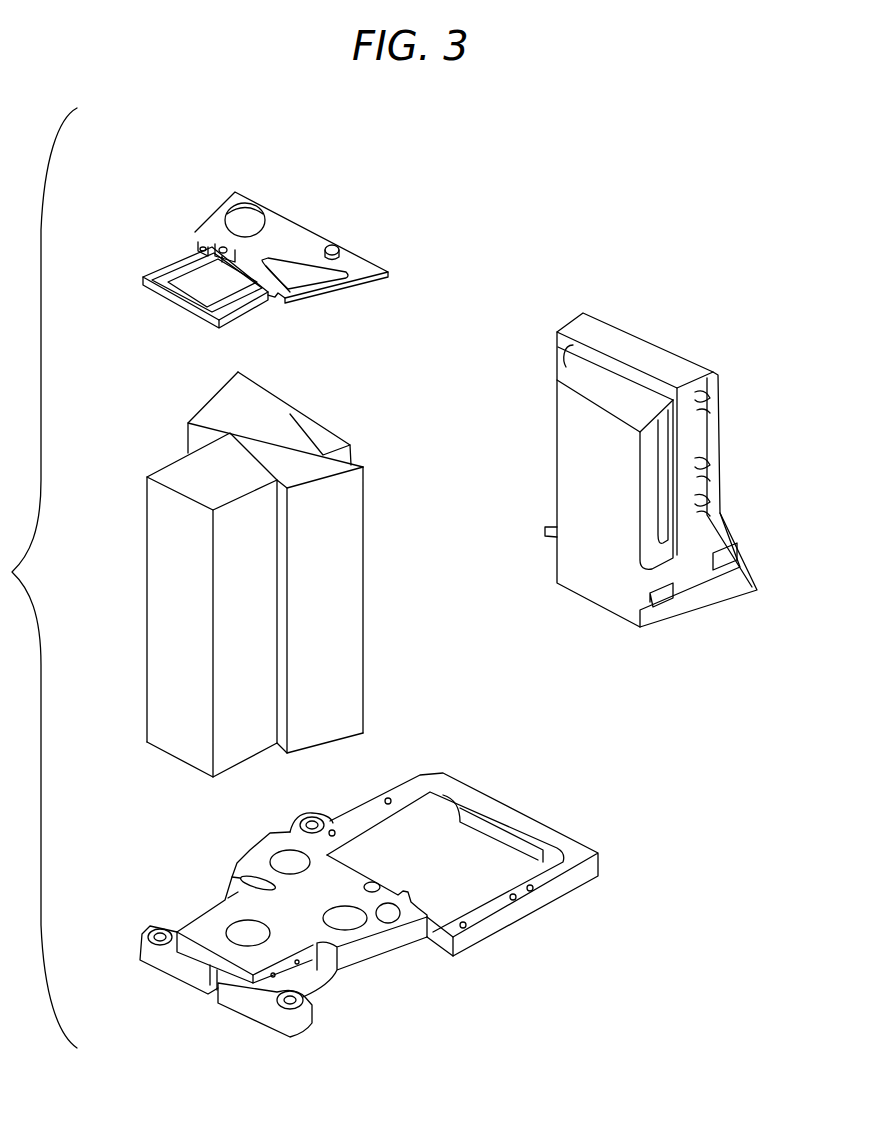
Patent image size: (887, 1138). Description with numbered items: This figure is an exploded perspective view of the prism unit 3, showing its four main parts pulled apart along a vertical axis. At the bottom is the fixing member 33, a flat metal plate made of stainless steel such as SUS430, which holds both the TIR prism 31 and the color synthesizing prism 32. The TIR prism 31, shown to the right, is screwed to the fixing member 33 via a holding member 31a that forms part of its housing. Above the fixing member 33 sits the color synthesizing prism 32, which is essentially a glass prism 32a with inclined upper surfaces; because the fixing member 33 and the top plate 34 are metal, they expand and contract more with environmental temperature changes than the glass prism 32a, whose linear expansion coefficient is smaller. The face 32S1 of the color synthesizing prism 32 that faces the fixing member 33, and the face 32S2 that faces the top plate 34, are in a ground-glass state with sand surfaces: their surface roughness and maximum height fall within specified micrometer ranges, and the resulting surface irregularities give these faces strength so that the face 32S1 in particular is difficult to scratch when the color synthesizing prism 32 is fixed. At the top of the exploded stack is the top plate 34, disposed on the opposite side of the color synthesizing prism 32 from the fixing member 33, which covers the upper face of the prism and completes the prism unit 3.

The prism unit 3 is at (680, 198).
The TIR prism 31 is at (575, 441).
The holding member 31a is at (693, 553).
The color synthesizing prism 32 is at (165, 414).
The glass prism 32a is at (206, 413).
The face facing the fixing member 32S1 is at (244, 762).
The face facing the top plate 32S2 is at (250, 403).
The fixing member 33 is at (400, 963).
The top plate 34 is at (290, 236).